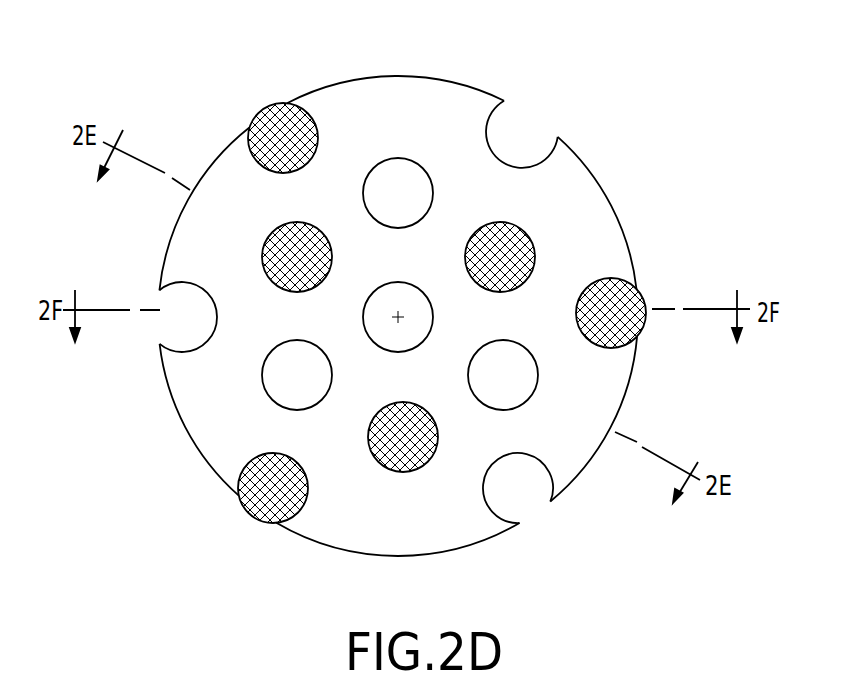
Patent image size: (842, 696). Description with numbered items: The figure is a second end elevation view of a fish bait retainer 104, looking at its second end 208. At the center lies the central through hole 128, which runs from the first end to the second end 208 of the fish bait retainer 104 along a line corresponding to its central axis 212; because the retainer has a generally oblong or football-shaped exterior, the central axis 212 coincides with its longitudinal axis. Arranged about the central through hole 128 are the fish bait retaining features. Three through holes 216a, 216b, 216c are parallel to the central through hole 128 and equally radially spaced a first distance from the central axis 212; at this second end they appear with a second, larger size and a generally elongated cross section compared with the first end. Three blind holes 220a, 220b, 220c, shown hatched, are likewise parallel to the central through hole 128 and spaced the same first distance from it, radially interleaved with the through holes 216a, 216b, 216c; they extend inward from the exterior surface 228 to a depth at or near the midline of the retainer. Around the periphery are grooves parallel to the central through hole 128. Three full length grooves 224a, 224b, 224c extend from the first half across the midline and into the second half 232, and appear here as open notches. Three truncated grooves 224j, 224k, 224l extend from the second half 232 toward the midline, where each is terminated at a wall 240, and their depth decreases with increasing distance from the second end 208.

The fish bait retainer 104 is at (352, 76).
The second end 208 is at (425, 278).
The exterior surface 228 is at (602, 232).
The full length groove 224a is at (527, 125).
The full length groove 224b is at (168, 303).
The full length groove 224c is at (520, 500).
The truncated groove 224j is at (287, 122).
The truncated groove 224k is at (270, 496).
The truncated groove 224l is at (630, 298).
The wall 240 is at (264, 132).
The through hole 216a is at (395, 190).
The through hole 216b is at (282, 373).
The through hole 216c is at (523, 380).
The blind hole 220a is at (277, 262).
The blind hole 220b is at (397, 468).
The blind hole 220c is at (530, 253).
The central axis 212 is at (393, 321).
The central through hole 128 is at (421, 342).
The second half 232 is at (468, 517).